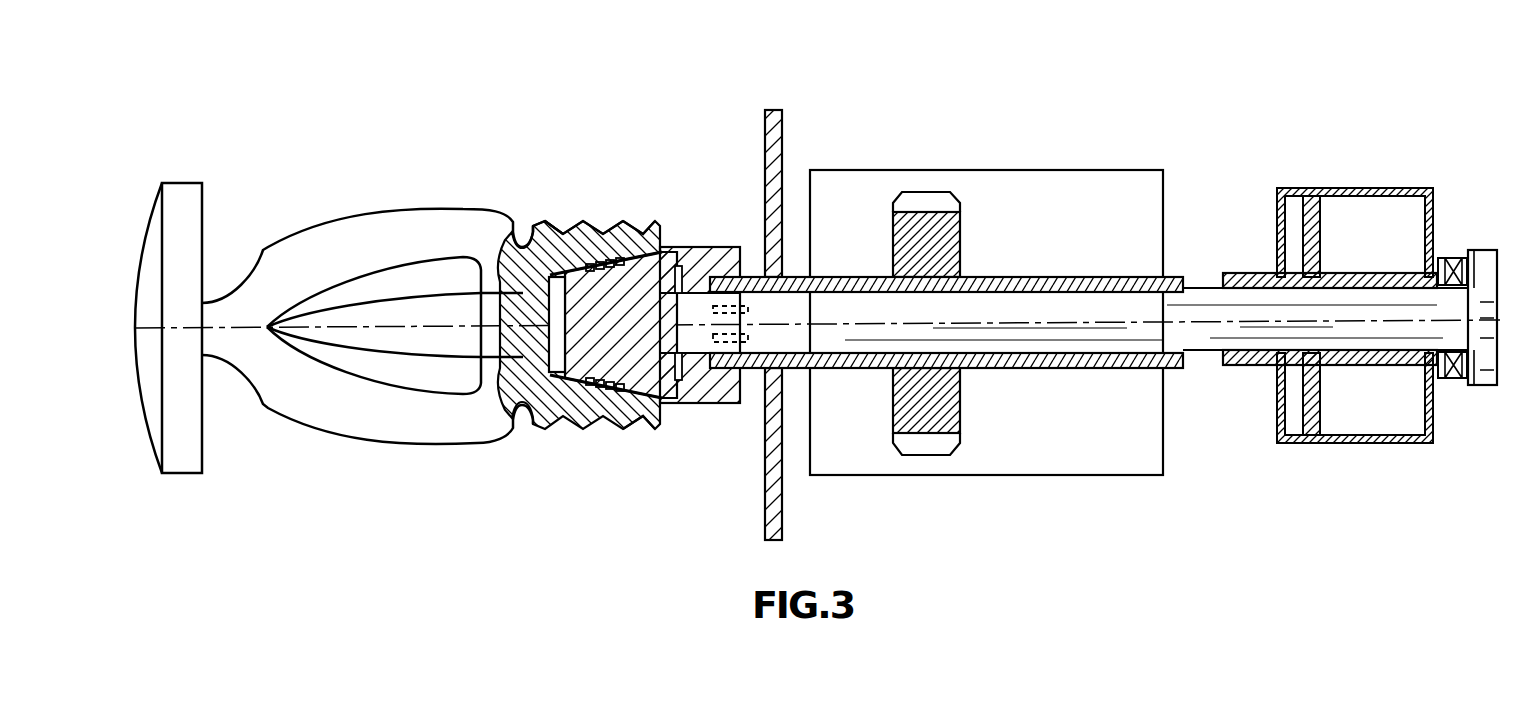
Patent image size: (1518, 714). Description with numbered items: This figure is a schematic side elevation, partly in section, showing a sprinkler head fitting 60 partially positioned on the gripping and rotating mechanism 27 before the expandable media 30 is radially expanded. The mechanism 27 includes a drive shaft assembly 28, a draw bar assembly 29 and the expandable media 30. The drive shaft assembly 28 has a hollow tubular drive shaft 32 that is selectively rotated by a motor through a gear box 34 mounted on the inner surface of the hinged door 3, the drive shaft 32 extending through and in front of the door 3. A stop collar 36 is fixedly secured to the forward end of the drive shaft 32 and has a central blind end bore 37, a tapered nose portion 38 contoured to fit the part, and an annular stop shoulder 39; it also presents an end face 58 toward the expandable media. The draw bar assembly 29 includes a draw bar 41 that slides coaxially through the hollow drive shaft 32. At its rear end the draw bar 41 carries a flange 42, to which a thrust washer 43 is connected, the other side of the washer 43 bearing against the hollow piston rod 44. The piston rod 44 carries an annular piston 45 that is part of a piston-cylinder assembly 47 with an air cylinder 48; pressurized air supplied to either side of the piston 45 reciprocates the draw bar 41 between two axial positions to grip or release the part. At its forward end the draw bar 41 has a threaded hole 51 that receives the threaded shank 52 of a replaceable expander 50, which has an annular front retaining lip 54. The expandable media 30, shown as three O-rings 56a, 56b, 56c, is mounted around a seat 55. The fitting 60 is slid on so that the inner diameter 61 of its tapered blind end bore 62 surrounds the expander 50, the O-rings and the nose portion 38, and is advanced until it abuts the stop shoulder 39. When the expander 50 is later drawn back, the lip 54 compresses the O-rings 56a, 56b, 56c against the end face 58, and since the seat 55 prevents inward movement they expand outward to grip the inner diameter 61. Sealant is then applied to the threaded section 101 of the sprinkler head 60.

The door 3 is at (782, 516).
The gripping and rotating mechanism 27 is at (722, 90).
The drive shaft assembly 28 is at (880, 274).
The draw bar assembly 29 is at (1262, 287).
The expandable media 30 is at (600, 233).
The drive shaft 32 is at (1000, 278).
The gear box 34 is at (1107, 172).
The stop collar 36 is at (708, 245).
The central blind end bore 37 is at (655, 345).
The tapered nose portion 38 is at (647, 233).
The annular stop shoulder 39 is at (643, 422).
The draw bar 41 is at (1193, 337).
The flange 42 is at (1482, 262).
The thrust washer 43 is at (1452, 258).
The piston rod 44 is at (1387, 270).
The annular piston 45 is at (1305, 215).
The piston-cylinder assembly 47 is at (1357, 410).
The air cylinder 48 is at (1400, 444).
The expander 50 is at (660, 395).
The threaded hole 51 is at (780, 372).
The threaded shank 52 is at (748, 308).
The annular front retaining lip 54 is at (563, 233).
The seat 55 is at (606, 385).
The O-ring 56a is at (585, 380).
The O-ring 56b is at (596, 387).
The O-ring 56c is at (617, 389).
The end face 58 is at (613, 233).
The fitting 60 is at (373, 233).
The inner diameter 61 is at (483, 352).
The tapered blind end bore 62 is at (483, 292).
The threaded section 101 is at (567, 233).